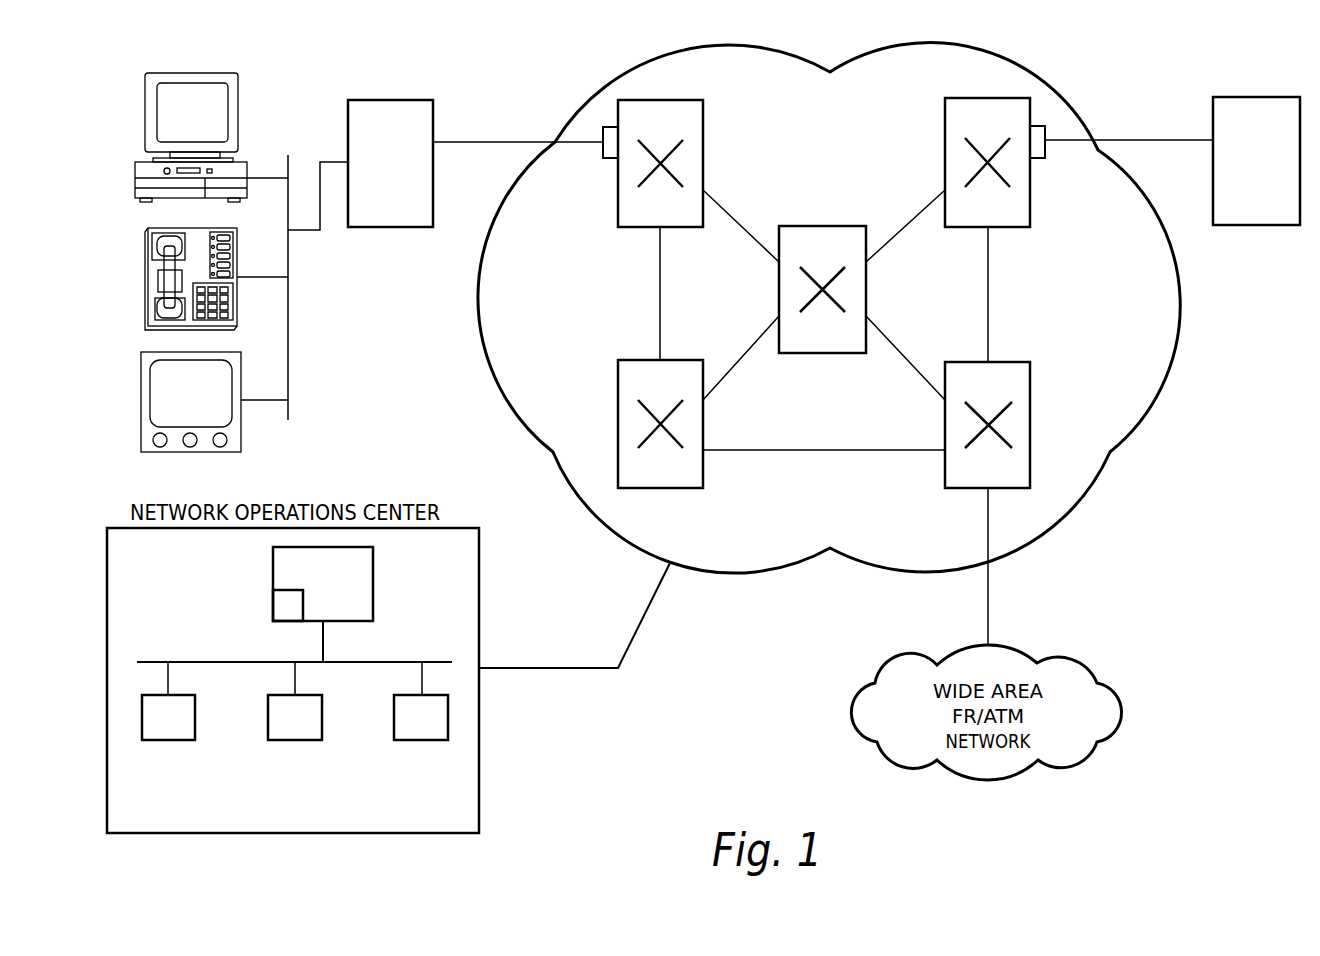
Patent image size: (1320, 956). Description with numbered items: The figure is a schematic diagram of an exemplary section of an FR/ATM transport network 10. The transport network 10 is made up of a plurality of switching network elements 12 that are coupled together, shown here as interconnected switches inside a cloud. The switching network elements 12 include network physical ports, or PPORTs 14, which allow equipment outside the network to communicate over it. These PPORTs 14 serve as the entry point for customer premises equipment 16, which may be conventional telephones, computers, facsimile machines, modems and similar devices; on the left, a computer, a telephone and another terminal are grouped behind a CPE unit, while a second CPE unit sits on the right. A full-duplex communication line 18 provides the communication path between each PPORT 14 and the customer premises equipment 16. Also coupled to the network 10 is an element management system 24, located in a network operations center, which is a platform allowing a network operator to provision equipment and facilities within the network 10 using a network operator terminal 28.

The FR/ATM transport network 10 is at (1155, 405).
The switching network element 12 is at (703, 113).
The network physical port 14 is at (606, 158).
The customer premises equipment 16 is at (145, 110).
The full-duplex communication line 18 is at (500, 141).
The element management system 24 is at (373, 596).
The network operator terminal 28 is at (195, 718).